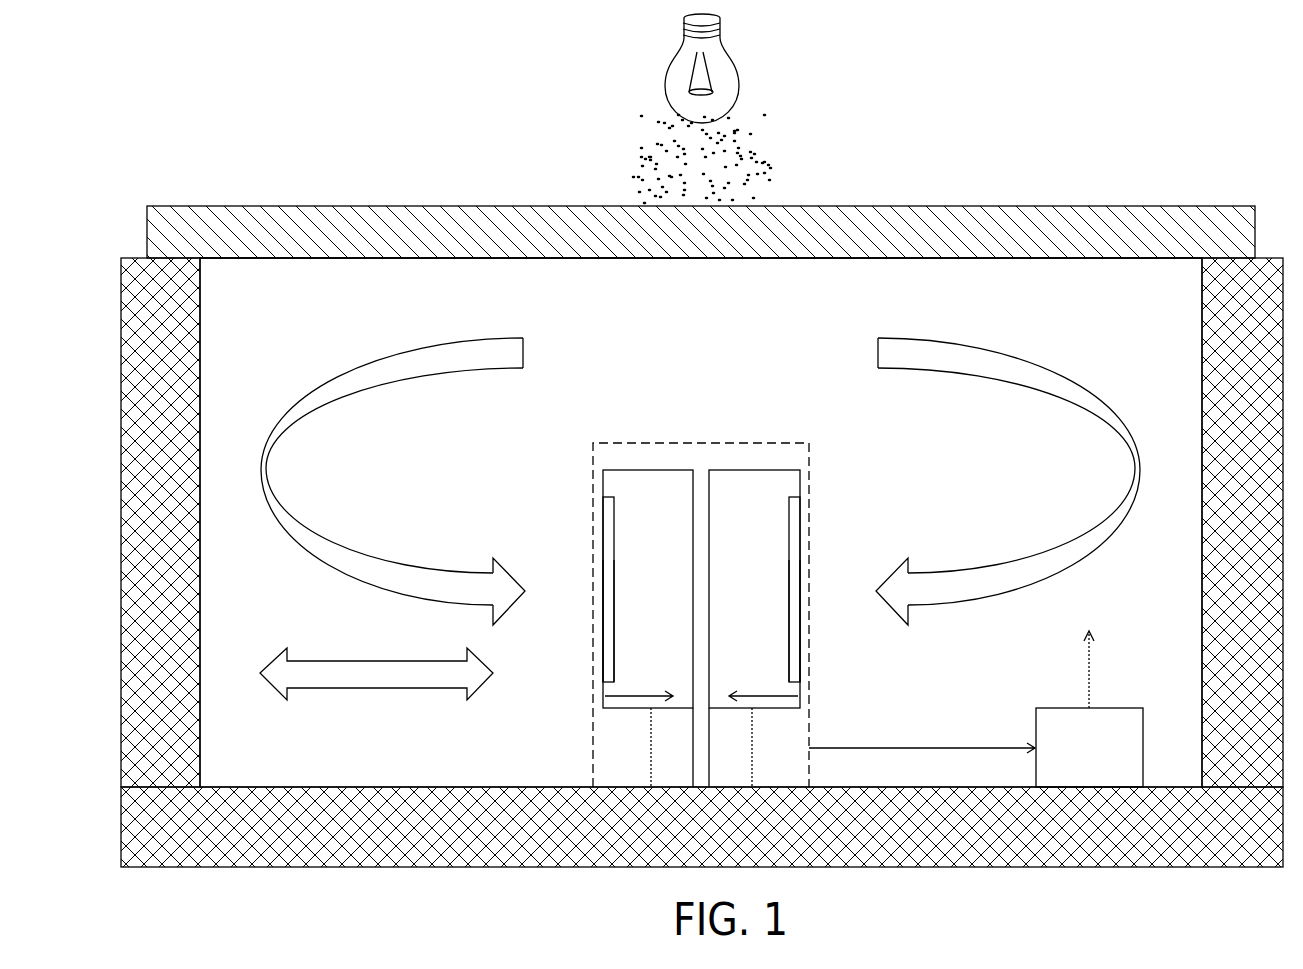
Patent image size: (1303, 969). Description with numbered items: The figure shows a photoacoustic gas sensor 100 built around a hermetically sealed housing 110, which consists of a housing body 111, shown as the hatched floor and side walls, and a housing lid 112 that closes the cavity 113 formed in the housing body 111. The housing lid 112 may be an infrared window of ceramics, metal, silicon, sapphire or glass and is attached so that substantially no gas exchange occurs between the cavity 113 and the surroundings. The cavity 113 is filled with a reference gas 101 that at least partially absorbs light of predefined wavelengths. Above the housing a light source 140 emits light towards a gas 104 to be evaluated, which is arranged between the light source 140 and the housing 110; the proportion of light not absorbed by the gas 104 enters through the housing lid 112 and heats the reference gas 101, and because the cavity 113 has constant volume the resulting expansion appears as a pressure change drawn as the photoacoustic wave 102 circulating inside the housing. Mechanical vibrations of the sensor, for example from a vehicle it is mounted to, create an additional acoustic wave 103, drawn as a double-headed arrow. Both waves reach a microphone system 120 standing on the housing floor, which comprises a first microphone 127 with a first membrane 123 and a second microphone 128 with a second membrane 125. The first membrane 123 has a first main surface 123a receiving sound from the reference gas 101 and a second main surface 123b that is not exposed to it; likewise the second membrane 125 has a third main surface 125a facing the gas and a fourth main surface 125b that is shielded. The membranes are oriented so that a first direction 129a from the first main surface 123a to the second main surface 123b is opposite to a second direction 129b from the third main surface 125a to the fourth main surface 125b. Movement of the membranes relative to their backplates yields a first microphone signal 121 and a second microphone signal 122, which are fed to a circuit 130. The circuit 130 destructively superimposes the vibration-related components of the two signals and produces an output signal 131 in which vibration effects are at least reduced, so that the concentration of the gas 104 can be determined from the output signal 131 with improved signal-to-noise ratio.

The photoacoustic gas sensor 100 is at (205, 140).
The reference gas 101 is at (1160, 318).
The photoacoustic wave 102 is at (347, 367).
The acoustic wave 103 is at (275, 657).
The gas 104 is at (773, 133).
The housing 110 is at (702, 551).
The housing body 111 is at (1068, 845).
The housing lid 112 is at (1095, 206).
The cavity 113 is at (325, 278).
The microphone system 120 is at (701, 569).
The first microphone signal 121 is at (922, 726).
The second microphone signal 122 is at (938, 748).
The first membrane 123 is at (791, 497).
The first main surface 123a is at (805, 653).
The second main surface 123b is at (788, 590).
The second membrane 125 is at (609, 497).
The third main surface 125a is at (601, 640).
The fourth main surface 125b is at (614, 590).
The first microphone 127 is at (752, 470).
The second microphone 128 is at (646, 470).
The first direction 129a is at (747, 690).
The second direction 129b is at (649, 690).
The circuit 130 is at (1089, 747).
The output signal 131 is at (1085, 651).
The light source 140 is at (729, 62).